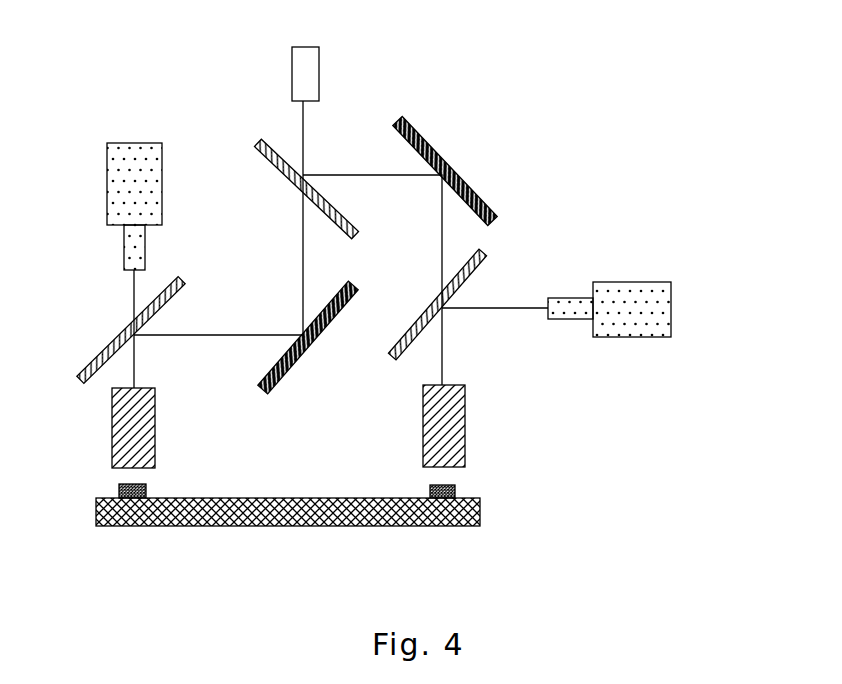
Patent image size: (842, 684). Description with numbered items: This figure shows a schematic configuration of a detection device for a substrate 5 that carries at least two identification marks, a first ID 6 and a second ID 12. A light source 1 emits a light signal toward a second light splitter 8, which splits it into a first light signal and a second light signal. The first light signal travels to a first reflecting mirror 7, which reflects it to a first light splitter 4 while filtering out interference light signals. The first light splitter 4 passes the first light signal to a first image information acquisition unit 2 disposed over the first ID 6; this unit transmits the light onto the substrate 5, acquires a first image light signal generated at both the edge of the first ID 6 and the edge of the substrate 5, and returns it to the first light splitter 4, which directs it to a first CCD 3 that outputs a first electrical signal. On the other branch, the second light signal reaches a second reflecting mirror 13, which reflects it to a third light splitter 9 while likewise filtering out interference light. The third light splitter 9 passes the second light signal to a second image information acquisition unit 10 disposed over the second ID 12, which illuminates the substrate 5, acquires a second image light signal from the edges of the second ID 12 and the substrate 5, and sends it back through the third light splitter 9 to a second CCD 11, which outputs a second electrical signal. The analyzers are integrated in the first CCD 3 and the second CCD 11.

The light source 1 is at (322, 73).
The second reflecting mirror 13 is at (437, 143).
The second light splitter 8 is at (282, 148).
The first charge coupled device (CCD) 3 is at (162, 183).
The first light splitter 4 is at (165, 303).
The first image information acquisition unit 2 is at (155, 425).
The first reflecting mirror 7 is at (327, 327).
The third light splitter 9 is at (468, 273).
The second CCD 11 is at (650, 282).
The second image information acquisition unit 10 is at (465, 423).
The first ID figure 6 is at (150, 488).
The second ID figure 12 is at (455, 485).
The substrate 5 is at (480, 510).